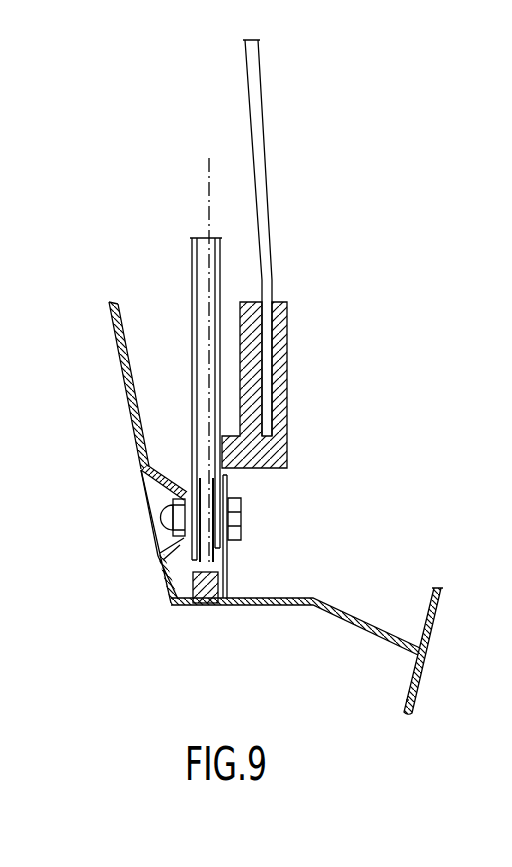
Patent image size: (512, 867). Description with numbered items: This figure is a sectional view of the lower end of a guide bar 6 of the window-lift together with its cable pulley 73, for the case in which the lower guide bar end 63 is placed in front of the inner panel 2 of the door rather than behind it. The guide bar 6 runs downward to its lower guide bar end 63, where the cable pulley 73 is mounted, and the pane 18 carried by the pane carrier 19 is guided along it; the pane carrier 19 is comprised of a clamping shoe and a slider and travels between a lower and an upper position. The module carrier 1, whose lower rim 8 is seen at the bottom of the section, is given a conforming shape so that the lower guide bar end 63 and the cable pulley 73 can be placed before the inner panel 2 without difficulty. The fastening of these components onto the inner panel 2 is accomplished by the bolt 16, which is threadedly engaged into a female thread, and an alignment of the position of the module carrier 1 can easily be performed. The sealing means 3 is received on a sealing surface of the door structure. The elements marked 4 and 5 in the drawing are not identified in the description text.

The module carrier 1 is at (118, 363).
The inner panel 2 is at (293, 600).
The sealing means 3 is at (205, 608).
The hook strip 4 is at (440, 598).
The gap 5 is at (390, 597).
The guide bar 6 is at (200, 277).
The lower rim of the module carrier 8 is at (159, 607).
The bolt 16 is at (162, 520).
The pane 18 is at (265, 148).
The pane carrier 19 is at (277, 343).
The lower guide bar end 63 is at (181, 466).
The cable pulley 73 is at (208, 522).